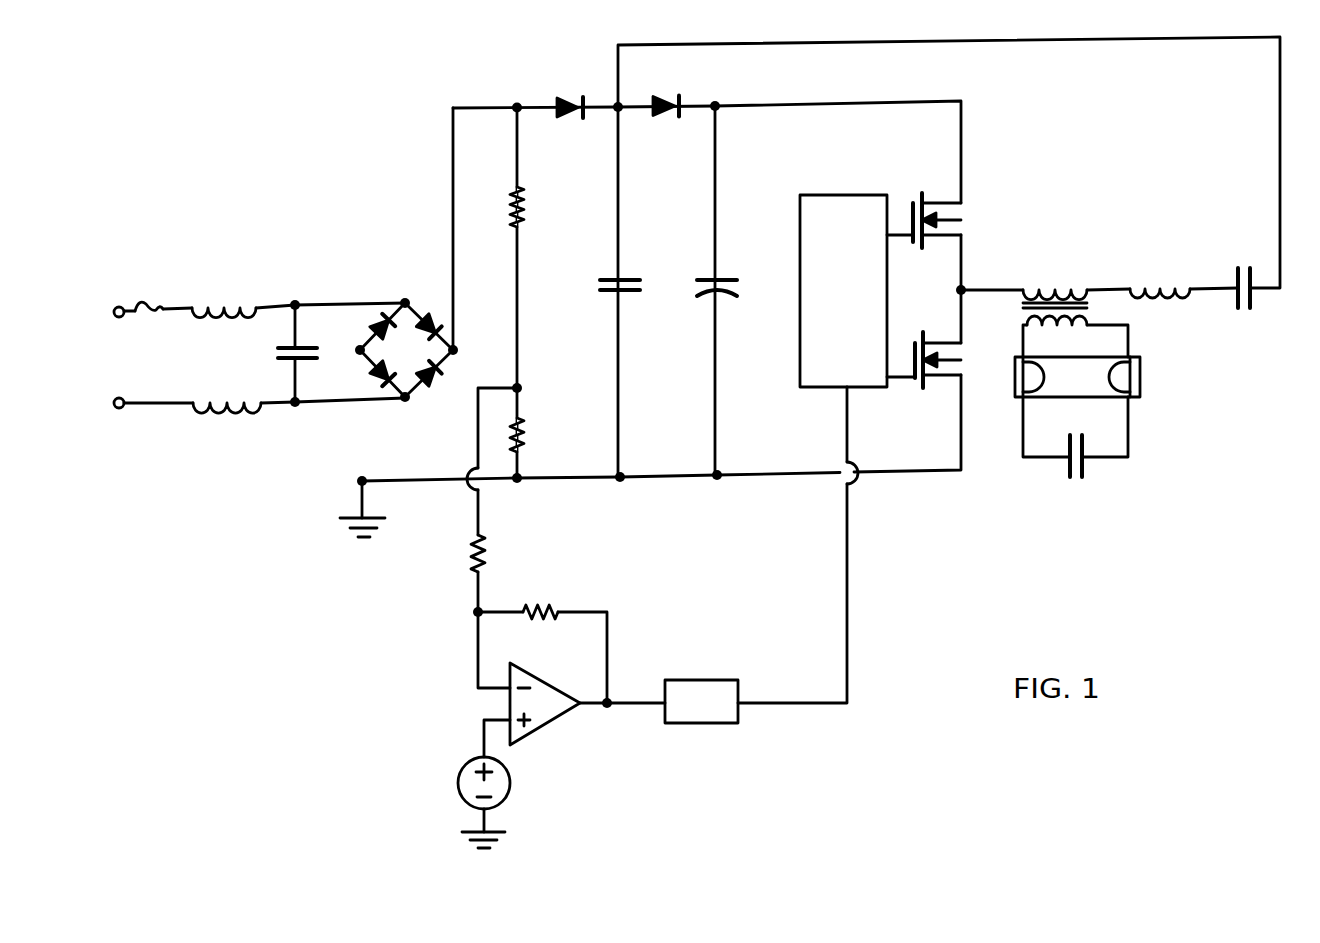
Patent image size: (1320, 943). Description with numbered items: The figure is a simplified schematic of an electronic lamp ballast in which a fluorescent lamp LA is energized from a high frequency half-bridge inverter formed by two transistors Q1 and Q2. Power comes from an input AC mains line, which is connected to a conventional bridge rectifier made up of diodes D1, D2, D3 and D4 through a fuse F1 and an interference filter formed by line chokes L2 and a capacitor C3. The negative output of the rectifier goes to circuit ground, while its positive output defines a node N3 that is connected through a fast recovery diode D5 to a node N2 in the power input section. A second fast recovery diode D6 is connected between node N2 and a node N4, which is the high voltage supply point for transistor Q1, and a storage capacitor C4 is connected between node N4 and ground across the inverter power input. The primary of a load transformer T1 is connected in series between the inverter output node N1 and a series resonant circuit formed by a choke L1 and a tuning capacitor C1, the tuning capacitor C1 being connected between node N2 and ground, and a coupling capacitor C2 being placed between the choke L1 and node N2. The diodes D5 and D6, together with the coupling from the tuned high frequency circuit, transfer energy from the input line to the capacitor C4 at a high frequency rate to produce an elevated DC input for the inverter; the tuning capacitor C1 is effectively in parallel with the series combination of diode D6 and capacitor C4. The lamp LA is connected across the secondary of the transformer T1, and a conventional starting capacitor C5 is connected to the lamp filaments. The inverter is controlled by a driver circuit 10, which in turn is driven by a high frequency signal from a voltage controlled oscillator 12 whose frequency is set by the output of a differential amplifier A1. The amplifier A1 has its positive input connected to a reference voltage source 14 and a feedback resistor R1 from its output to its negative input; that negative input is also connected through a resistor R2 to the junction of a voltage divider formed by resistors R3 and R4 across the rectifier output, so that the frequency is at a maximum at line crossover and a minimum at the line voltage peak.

The input AC is at (120, 318).
The fuse F1 is at (150, 292).
The line chokes L2 is at (226, 357).
The capacitor C3 is at (281, 354).
The bridge rectifier diode D1 is at (438, 322).
The bridge rectifier diode D2 is at (440, 372).
The bridge rectifier diode D3 is at (390, 385).
The bridge rectifier diode D4 is at (378, 323).
The node N3 is at (455, 346).
The resistor R4 is at (532, 207).
The resistor R3 is at (533, 435).
The fast recovery diode D5 is at (569, 88).
The second fast recovery diode D6 is at (665, 88).
The node N2 is at (620, 110).
The node N4 is at (717, 104).
The tuning capacitor C1 is at (604, 286).
The storage capacitor C4 is at (729, 286).
The driver circuit 10 is at (806, 195).
The transistor Q1 is at (924, 205).
The transistor Q2 is at (924, 370).
The output node N1 is at (963, 293).
The load transformer T1 is at (1075, 323).
The choke L1 is at (1160, 276).
The coupling capacitor C2 is at (1246, 302).
The fluorescent lamp LA is at (1094, 377).
The starting capacitor C5 is at (1075, 452).
The resistor R2 is at (493, 553).
The feedback resistor R1 is at (540, 627).
The differential amplifier A1 is at (530, 733).
The voltage controlled oscillator 12 is at (690, 680).
The reference voltage source 14 is at (460, 778).